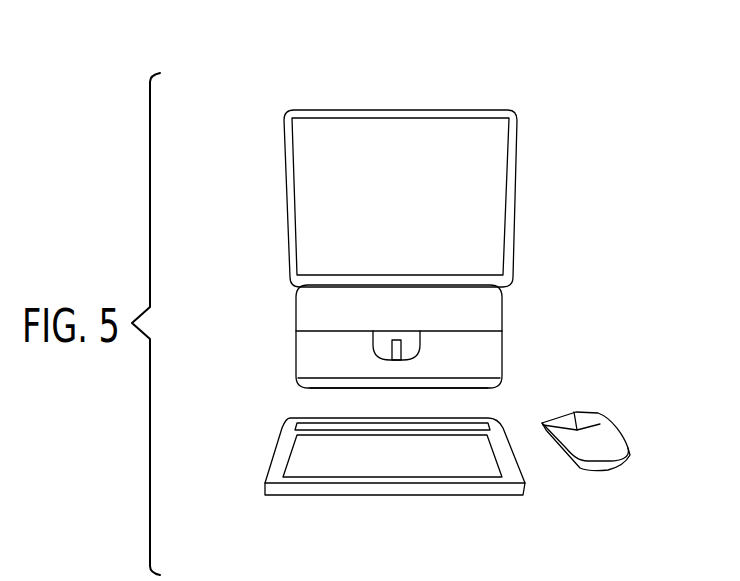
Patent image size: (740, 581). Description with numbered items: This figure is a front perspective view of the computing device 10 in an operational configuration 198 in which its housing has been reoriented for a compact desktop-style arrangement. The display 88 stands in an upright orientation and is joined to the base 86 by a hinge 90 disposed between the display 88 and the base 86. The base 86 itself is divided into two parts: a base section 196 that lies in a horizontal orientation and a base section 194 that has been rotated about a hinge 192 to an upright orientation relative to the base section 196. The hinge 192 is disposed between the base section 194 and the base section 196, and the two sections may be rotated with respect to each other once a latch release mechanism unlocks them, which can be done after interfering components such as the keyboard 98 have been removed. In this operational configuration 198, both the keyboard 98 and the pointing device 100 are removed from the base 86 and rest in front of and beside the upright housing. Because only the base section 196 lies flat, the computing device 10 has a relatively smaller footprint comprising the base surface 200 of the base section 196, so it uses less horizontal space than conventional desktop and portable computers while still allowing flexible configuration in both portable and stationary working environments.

The computing device 10 is at (468, 61).
The display 88 is at (492, 112).
The operational configuration 198 is at (573, 142).
The hinge 90 is at (509, 283).
The hinge 192 is at (507, 329).
The base section 194 is at (296, 304).
The base section 196 is at (296, 357).
The base 86 is at (507, 361).
The base surface 200 is at (463, 388).
The keyboard 98 is at (327, 487).
The pointing device 100 is at (616, 428).